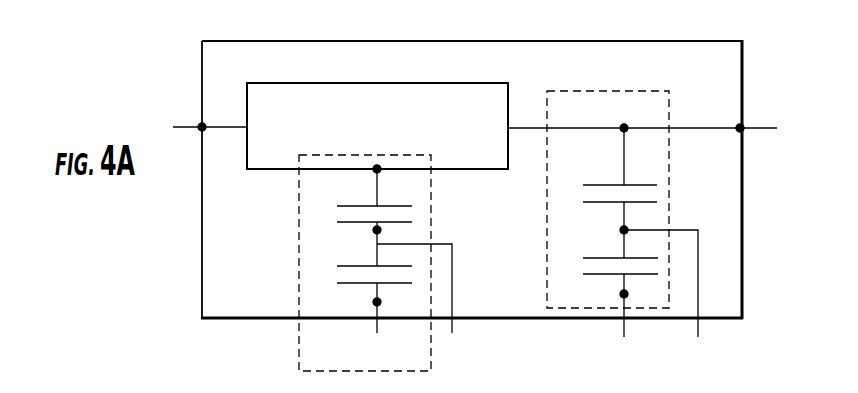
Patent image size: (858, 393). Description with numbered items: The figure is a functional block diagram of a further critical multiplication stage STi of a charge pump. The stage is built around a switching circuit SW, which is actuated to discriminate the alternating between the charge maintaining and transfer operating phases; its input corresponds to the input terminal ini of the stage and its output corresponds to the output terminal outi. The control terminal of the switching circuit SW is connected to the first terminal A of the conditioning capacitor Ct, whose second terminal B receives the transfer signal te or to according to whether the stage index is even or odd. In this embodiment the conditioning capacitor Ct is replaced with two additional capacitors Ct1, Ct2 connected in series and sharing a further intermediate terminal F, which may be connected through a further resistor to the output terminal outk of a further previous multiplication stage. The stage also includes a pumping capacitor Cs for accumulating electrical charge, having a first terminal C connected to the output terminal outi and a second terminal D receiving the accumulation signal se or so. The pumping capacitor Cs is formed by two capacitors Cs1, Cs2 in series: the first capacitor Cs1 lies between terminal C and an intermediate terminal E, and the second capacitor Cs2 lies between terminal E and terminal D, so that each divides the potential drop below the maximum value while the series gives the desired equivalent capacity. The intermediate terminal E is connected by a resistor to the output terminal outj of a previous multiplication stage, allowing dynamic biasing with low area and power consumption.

The critical multiplication stage STi is at (742, 250).
The switching circuit SW is at (377, 126).
The input terminal ini is at (210, 115).
The output terminal outi is at (645, 116).
The conditioning capacitor Ct is at (399, 263).
The first additional capacitor Ct1 is at (359, 219).
The second additional capacitor Ct2 is at (359, 280).
The pumping capacitor Cs is at (639, 221).
The first capacitor Cs1 is at (607, 185).
The second capacitor Cs2 is at (606, 260).
The first terminal of conditioning capacitor A is at (369, 184).
The second terminal of conditioning capacitor B is at (370, 302).
The first terminal of pumping capacitor C is at (617, 139).
The second terminal of pumping capacitor D is at (617, 294).
The intermediate terminal E is at (618, 227).
The further intermediate terminal F is at (369, 239).
The output terminal of further previous multiplication stage outk is at (433, 297).
The output terminal of previous multiplication stage outj is at (678, 291).